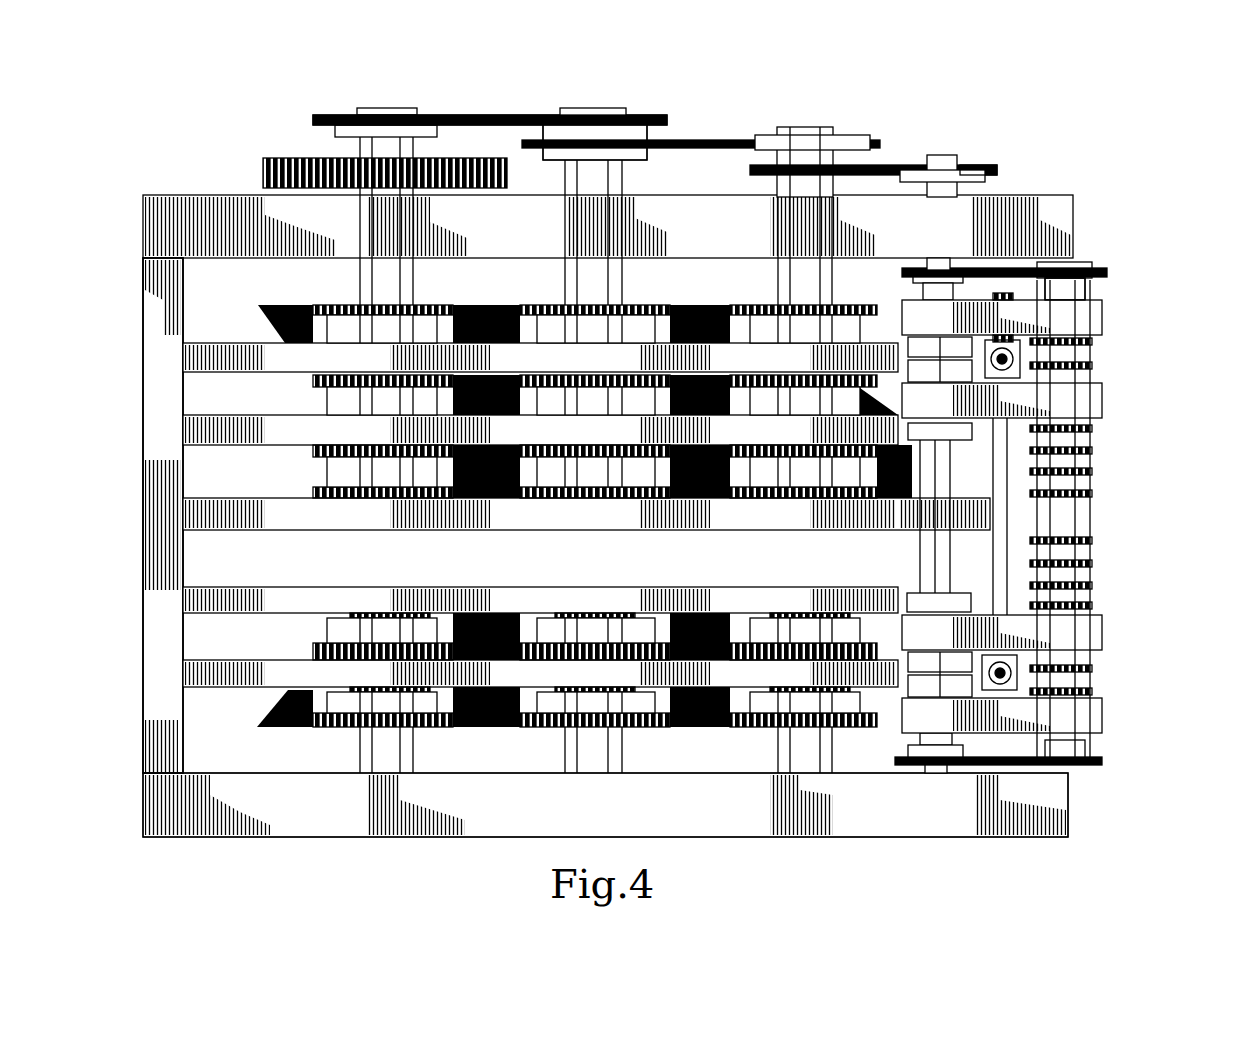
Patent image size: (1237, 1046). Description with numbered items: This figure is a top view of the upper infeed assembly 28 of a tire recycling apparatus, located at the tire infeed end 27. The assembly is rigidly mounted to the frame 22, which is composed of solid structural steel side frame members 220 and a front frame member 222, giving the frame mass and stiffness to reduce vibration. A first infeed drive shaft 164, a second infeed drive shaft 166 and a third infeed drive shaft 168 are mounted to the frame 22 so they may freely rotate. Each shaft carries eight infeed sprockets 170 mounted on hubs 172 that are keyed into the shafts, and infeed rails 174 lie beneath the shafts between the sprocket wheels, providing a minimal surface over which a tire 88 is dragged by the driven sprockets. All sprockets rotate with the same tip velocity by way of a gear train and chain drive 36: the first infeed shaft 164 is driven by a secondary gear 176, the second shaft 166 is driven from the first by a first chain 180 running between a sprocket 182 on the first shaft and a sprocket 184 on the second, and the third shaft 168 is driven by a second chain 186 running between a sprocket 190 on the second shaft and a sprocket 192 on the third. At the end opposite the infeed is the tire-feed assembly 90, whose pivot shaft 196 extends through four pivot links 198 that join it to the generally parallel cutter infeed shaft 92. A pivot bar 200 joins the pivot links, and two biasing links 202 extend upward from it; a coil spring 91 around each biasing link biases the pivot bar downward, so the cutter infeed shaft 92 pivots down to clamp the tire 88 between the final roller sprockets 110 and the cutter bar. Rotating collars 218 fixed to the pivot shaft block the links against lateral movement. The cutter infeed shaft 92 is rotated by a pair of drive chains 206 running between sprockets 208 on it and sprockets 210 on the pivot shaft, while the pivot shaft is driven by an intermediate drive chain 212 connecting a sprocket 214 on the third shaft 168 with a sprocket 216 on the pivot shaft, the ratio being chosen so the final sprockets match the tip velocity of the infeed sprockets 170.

The frame 22 is at (328, 240).
The side frame members 220 is at (523, 234).
The front frame member 222 is at (143, 350).
The tire infeed end 27 is at (143, 425).
The upper infeed assembly 28 is at (430, 842).
The infeed rails 174 is at (248, 372).
The infeed sprockets 170 is at (272, 325).
The tire 88 is at (486, 395).
The hubs 172 is at (485, 305).
The first infeed drive shaft 164 is at (360, 290).
The second infeed drive shaft 166 is at (622, 278).
The third infeed drive shaft 168 is at (832, 290).
The secondary gear 176 is at (263, 160).
The sprocket 182 is at (380, 108).
The first chain 180 is at (480, 115).
The gear train and chain drive 36 is at (650, 112).
The sprocket 184 is at (600, 108).
The sprocket 190 is at (650, 160).
The second chain 186 is at (720, 140).
The sprocket 192 is at (845, 135).
The sprocket 214 is at (760, 175).
The intermediate drive chain 212 is at (935, 155).
The pivot shaft 196 is at (955, 160).
The sprocket 216 is at (997, 175).
The drive chains 206 is at (1030, 268).
The sprockets 208 is at (1100, 270).
The sprockets 210 is at (970, 268).
The pivot links 198 is at (1102, 312).
The biasing links 202 is at (975, 337).
The coil spring 91 is at (1020, 359).
The rotating collars 218 is at (975, 593).
The pivot bar 200 is at (1050, 500).
The roller sprockets 110 is at (1092, 494).
The cutter infeed shaft 92 is at (1098, 275).
The tire-feed assembly 90 is at (1085, 283).